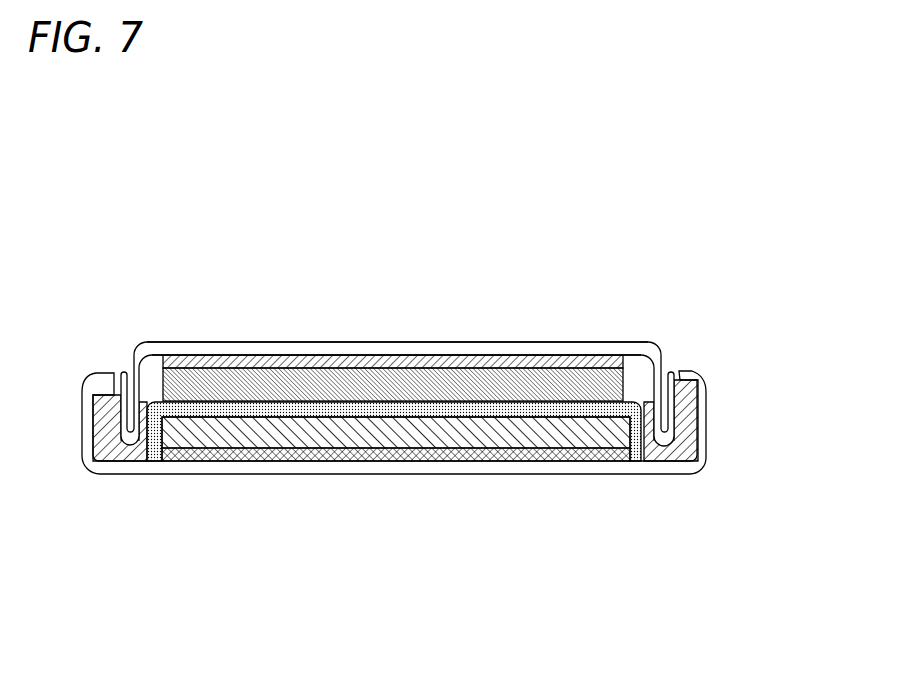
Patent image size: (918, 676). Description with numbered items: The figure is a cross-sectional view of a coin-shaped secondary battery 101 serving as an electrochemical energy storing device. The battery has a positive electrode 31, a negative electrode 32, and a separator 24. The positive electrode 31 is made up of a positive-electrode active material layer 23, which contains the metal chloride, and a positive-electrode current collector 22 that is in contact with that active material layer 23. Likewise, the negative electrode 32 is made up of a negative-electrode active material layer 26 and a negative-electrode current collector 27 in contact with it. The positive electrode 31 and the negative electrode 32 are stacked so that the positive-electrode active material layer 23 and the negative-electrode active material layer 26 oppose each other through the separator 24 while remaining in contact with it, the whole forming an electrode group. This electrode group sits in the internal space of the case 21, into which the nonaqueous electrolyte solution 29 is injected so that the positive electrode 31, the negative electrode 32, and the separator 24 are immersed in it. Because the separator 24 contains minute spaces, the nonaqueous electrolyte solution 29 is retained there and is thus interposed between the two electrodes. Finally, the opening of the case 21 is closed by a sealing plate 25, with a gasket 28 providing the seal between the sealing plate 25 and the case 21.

The coin-shaped secondary battery 101 is at (759, 225).
The case 21 is at (217, 470).
The positive-electrode current collector 22 is at (502, 590).
The positive-electrode active material layer 23 is at (540, 440).
The separator 24 is at (640, 373).
The sealing plate 25 is at (182, 352).
The negative-electrode active material layer 26 is at (443, 242).
The negative-electrode current collector 27 is at (457, 362).
The gasket 28 is at (678, 458).
The nonaqueous electrolyte solution 29 is at (641, 373).
The positive electrode 31 is at (396, 538).
The negative electrode 32 is at (393, 296).